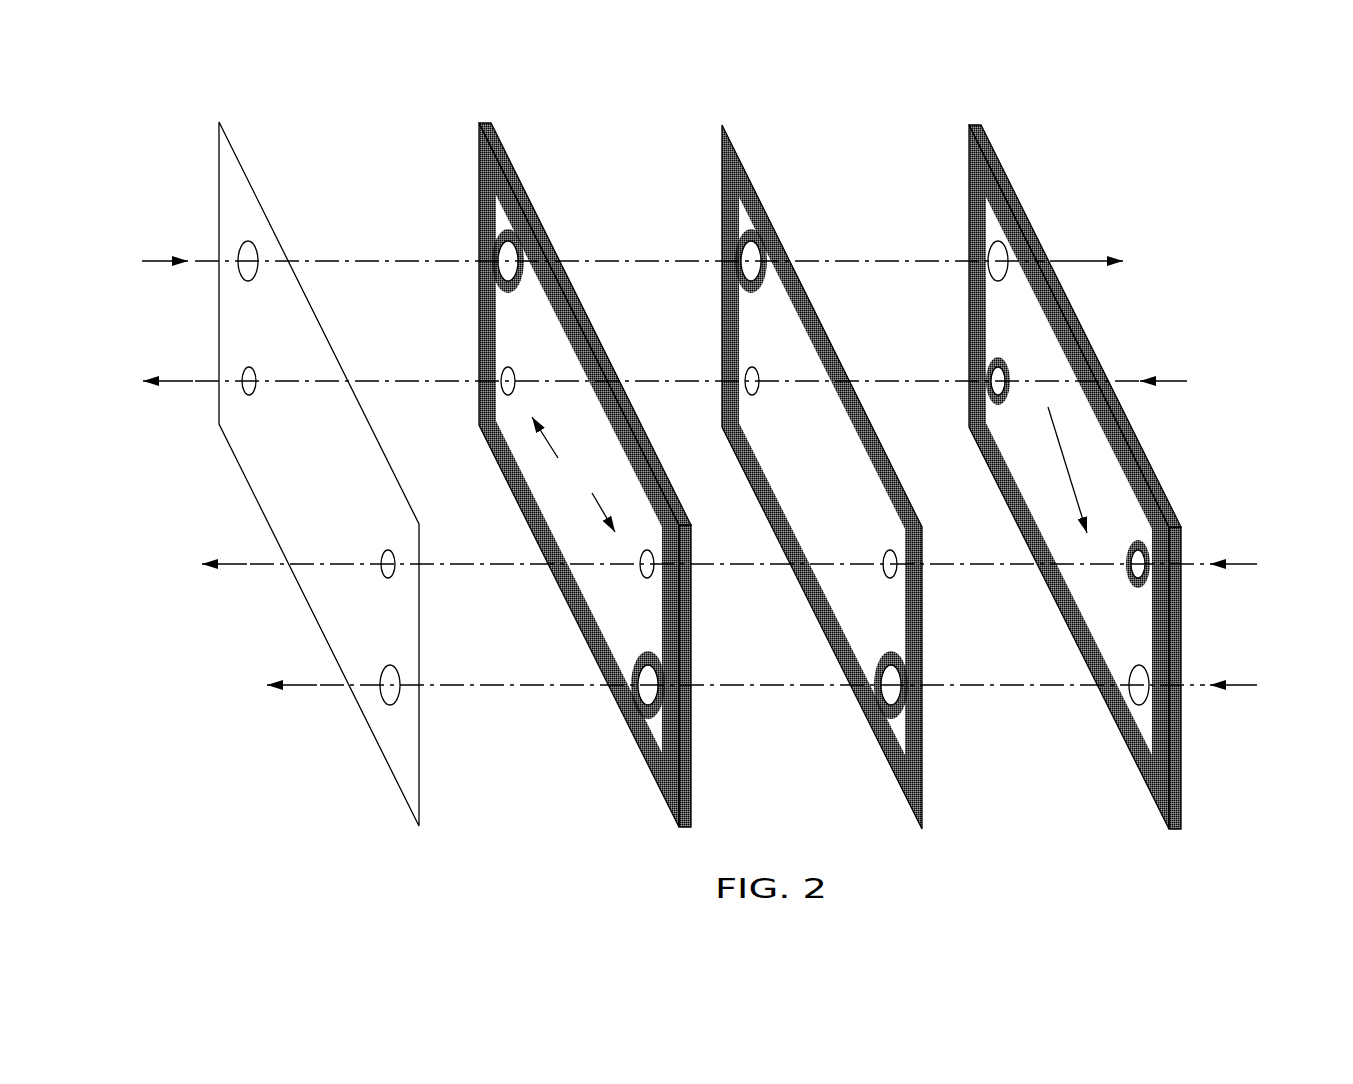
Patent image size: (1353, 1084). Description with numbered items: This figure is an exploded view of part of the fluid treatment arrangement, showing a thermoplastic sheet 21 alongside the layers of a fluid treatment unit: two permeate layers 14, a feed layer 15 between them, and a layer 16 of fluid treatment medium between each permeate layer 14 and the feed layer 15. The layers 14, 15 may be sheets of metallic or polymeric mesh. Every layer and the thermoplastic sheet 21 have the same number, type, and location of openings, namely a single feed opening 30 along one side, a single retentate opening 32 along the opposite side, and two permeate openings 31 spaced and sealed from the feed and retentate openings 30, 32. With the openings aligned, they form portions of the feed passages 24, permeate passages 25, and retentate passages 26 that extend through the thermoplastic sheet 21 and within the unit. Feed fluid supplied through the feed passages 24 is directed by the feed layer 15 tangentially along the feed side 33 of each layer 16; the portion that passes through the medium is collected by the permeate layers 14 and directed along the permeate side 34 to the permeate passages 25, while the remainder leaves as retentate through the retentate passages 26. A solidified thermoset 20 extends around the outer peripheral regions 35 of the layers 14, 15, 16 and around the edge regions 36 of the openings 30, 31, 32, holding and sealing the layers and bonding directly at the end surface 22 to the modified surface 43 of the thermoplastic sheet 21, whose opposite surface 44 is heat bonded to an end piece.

The permeate layer 14 is at (503, 147).
The feed layer 15 is at (990, 145).
The layer of fluid treatment medium 16 is at (733, 150).
The solidified thermoset 20 is at (753, 476).
The thermoplastic sheet 21 is at (243, 172).
The end surface 22 is at (567, 473).
The feed passage 24 is at (160, 258).
The permeate passage 25 is at (185, 383).
The retentate passage 26 is at (315, 683).
The feed opening 30 is at (245, 268).
The permeate opening 31 is at (247, 372).
The retentate opening 32 is at (387, 697).
The feed side 33 is at (902, 485).
The permeate side 34 is at (812, 457).
The outer peripheral region 35 is at (485, 175).
The edge region 36 is at (515, 293).
The modified surface 43 is at (397, 483).
The opposite surface 44 is at (288, 432).